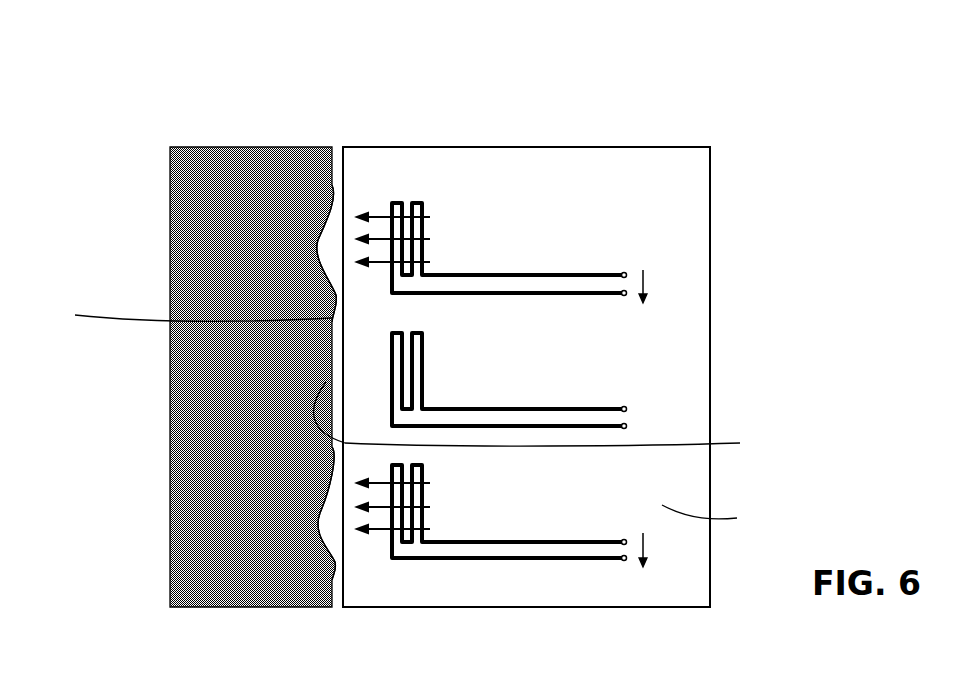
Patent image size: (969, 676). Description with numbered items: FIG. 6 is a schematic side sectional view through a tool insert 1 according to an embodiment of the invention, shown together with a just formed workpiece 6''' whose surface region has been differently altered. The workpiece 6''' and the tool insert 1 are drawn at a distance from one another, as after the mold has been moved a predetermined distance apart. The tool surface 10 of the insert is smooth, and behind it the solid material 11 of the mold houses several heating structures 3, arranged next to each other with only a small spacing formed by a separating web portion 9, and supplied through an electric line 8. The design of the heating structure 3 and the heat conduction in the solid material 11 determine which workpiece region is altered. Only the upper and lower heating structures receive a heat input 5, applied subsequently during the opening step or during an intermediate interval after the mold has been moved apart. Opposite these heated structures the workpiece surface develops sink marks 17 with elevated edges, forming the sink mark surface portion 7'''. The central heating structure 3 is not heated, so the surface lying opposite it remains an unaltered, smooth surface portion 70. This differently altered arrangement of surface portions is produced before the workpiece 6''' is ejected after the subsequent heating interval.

The tool insert 1 is at (726, 212).
The heating structure 3 is at (412, 392).
The heat input 5 is at (343, 173).
The workpiece 6''' is at (239, 341).
The sink mark surface portion 7''' is at (295, 170).
The electric line 8 is at (560, 558).
The separating web portion 9 is at (187, 321).
The tool surface 10 is at (370, 213).
The solid material 11 is at (731, 520).
The sink mark 17 is at (320, 230).
The unaltered surface portion 70 is at (560, 426).